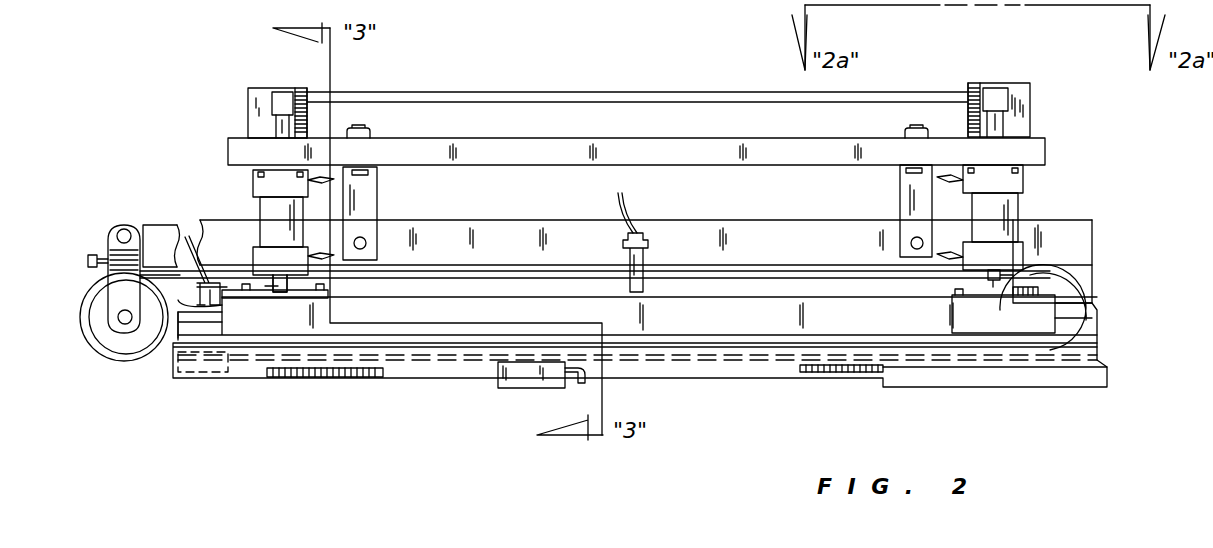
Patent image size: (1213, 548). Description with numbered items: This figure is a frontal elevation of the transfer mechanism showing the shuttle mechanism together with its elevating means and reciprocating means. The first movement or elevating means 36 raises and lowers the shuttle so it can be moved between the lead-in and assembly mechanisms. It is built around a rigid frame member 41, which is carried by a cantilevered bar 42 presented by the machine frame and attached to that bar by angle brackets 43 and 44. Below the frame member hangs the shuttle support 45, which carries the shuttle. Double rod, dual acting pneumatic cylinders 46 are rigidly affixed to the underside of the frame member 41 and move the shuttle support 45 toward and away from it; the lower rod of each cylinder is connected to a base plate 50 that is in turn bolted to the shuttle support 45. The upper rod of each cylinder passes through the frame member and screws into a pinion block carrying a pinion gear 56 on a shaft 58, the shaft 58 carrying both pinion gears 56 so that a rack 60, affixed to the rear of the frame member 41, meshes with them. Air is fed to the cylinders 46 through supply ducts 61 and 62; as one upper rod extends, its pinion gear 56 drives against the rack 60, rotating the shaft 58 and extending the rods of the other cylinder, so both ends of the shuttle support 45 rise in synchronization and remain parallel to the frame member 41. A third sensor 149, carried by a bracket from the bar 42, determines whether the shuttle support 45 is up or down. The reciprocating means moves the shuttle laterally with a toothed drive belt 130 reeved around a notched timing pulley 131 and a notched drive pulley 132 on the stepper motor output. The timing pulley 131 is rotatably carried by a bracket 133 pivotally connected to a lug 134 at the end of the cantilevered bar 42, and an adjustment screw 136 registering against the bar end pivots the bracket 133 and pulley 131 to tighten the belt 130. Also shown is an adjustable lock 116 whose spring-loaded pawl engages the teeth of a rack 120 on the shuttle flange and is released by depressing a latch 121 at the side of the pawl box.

The first movement means 36 is at (1048, 105).
The rigid frame member 41 is at (680, 158).
The cantilevered bar 42 is at (460, 225).
The angle bracket 43 is at (372, 200).
The angle bracket 44 is at (902, 210).
The shuttle support 45 is at (712, 340).
The double rod, dual acting pneumatic cylinder 46 is at (1005, 215).
The base plate 50 is at (965, 297).
The pinion gear 56 is at (970, 83).
The shaft 58 is at (627, 92).
The rack 60 is at (305, 130).
The supply duct 61 is at (943, 175).
The supply duct 62 is at (945, 252).
The adjustable lock 116 is at (520, 380).
The rack 120 is at (318, 378).
The latch 121 is at (575, 385).
The toothed drive belt 130 is at (165, 372).
The notched timing pulley 131 is at (127, 352).
The notched drive pulley 132 is at (1065, 295).
The bracket 133 is at (122, 324).
The lug 134 is at (140, 225).
The adjustment screw 136 is at (98, 255).
The third sensor 149 is at (648, 240).